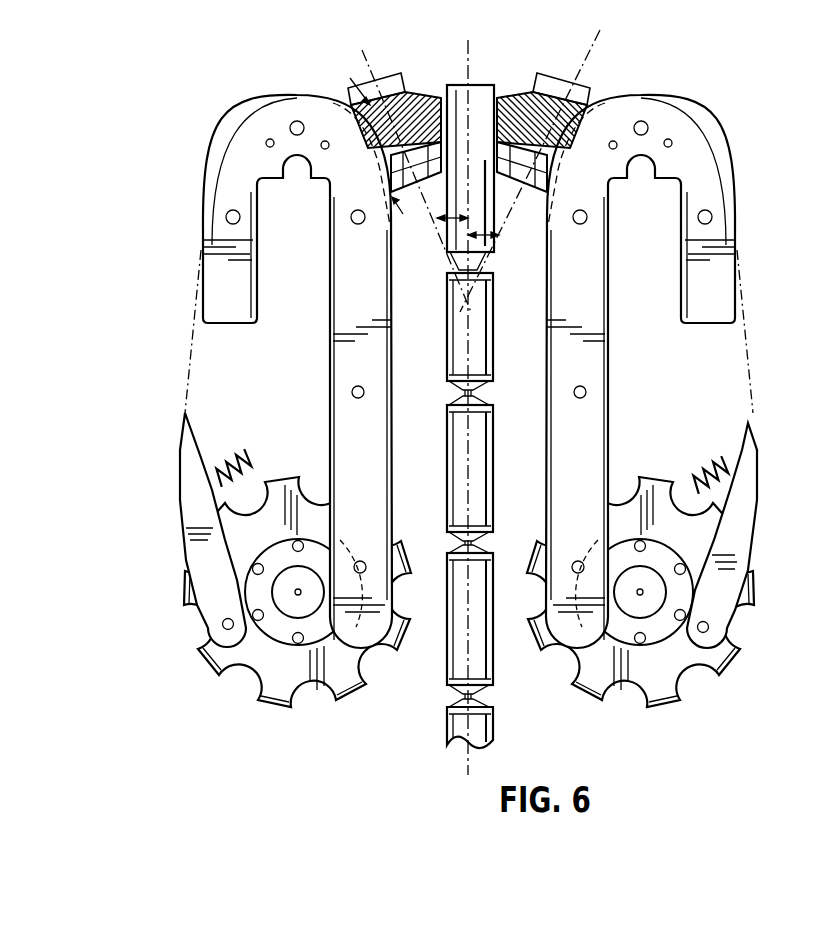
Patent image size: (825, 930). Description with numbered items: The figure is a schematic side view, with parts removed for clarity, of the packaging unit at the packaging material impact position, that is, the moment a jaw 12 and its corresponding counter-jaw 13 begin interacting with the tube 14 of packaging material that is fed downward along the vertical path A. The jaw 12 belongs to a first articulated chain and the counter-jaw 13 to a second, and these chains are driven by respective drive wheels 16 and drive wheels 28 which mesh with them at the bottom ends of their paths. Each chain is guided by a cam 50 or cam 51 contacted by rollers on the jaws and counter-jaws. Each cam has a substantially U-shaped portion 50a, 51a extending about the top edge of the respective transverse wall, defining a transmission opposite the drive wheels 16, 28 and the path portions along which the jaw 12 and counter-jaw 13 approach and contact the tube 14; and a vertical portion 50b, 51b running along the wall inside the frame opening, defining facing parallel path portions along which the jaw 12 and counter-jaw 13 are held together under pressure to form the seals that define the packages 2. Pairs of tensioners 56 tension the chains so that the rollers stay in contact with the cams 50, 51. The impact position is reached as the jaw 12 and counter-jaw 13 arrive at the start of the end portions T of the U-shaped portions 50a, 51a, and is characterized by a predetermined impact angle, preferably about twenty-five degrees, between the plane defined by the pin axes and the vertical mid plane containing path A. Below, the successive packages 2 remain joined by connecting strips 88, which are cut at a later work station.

The aseptic sealed packages 2 is at (481, 327).
The jaw 12 is at (406, 92).
The counter-jaw 13 is at (514, 104).
The tube of packaging material 14 is at (478, 92).
The drive wheels 16 is at (287, 690).
The drive wheels 28 is at (680, 688).
The cam 50 is at (658, 365).
The cam 51 is at (708, 110).
The U-shaped portion of cam 50a is at (288, 338).
The U-shaped portion of cam 51a is at (327, 110).
The vertical portion of cam 50b is at (472, 418).
The vertical portion of cam 51b is at (334, 368).
The tensioners 56 is at (178, 520).
The connecting strips 88 is at (463, 395).
The vertical path A is at (466, 45).
The end portions T is at (371, 145).